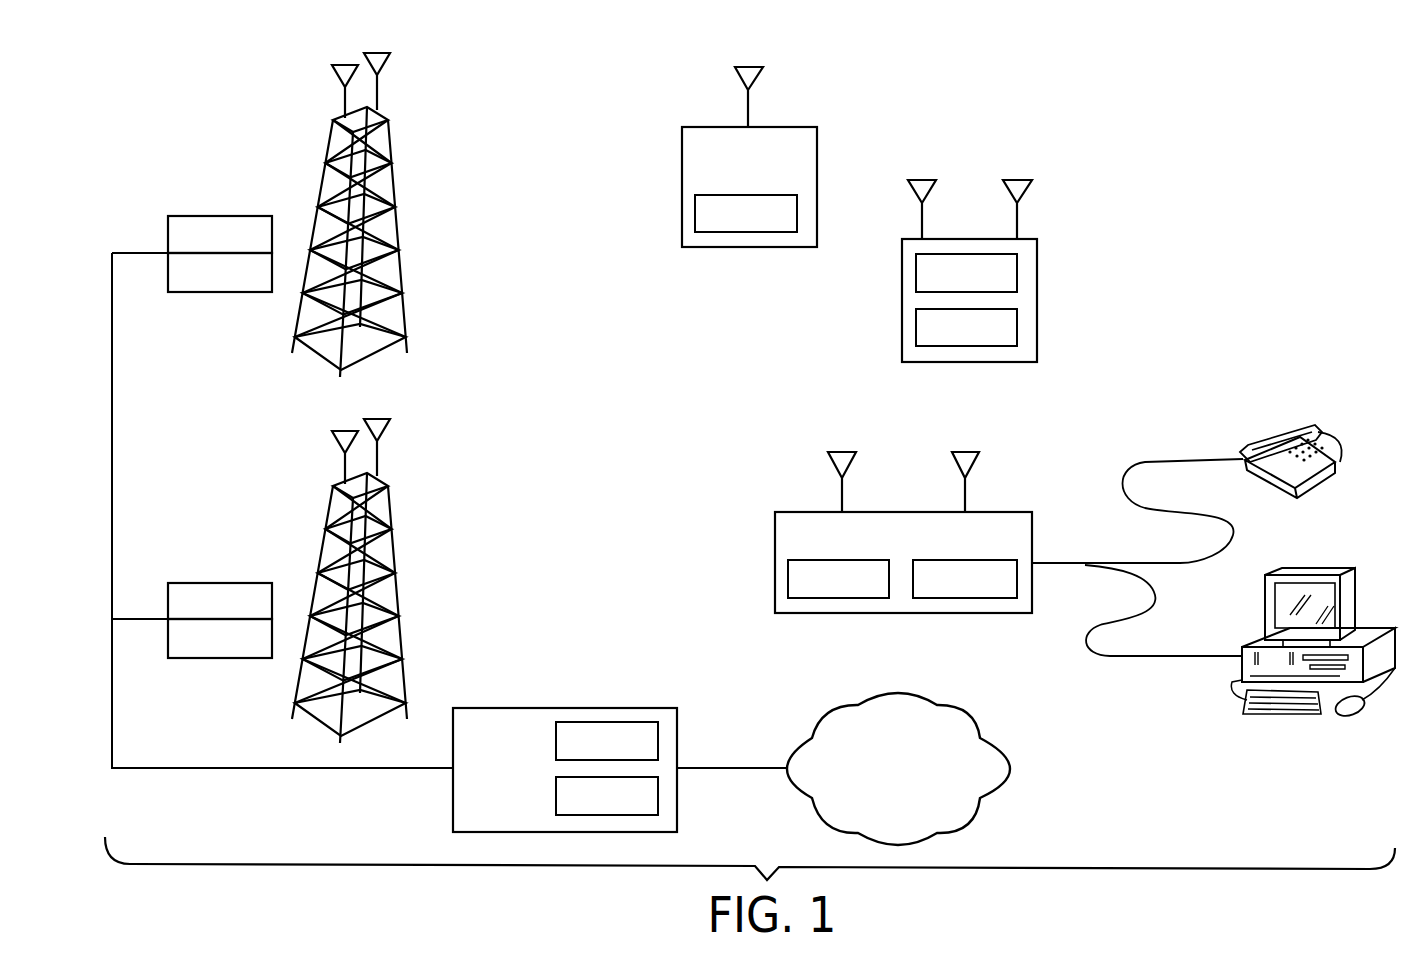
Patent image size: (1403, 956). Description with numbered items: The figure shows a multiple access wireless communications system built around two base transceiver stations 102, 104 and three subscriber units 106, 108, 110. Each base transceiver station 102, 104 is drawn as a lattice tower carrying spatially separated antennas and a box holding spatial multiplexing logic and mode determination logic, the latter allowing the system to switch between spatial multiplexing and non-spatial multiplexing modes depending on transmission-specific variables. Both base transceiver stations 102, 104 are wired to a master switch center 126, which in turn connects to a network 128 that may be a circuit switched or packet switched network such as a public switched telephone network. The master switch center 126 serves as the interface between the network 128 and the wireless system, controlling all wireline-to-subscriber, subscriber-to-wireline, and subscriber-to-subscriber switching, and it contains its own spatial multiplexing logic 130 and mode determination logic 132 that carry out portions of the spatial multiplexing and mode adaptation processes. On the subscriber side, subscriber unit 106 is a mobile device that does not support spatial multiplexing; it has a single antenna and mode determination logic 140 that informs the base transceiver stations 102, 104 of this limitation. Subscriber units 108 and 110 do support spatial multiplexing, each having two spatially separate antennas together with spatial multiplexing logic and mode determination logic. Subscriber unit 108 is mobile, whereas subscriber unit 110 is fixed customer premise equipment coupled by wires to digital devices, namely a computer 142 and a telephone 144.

The base transceiver station 102 is at (403, 179).
The base transceiver station 104 is at (403, 545).
The subscriber unit 106 is at (682, 150).
The subscriber unit 108 is at (902, 299).
The subscriber unit 110 is at (775, 557).
The master switch center 126 is at (530, 708).
The network 128 is at (1010, 769).
The spatial multiplexing logic 130 is at (658, 741).
The mode determination logic 132 is at (658, 797).
The mode determination logic 140 is at (695, 212).
The computer 142 is at (1318, 568).
The telephone 144 is at (1320, 493).